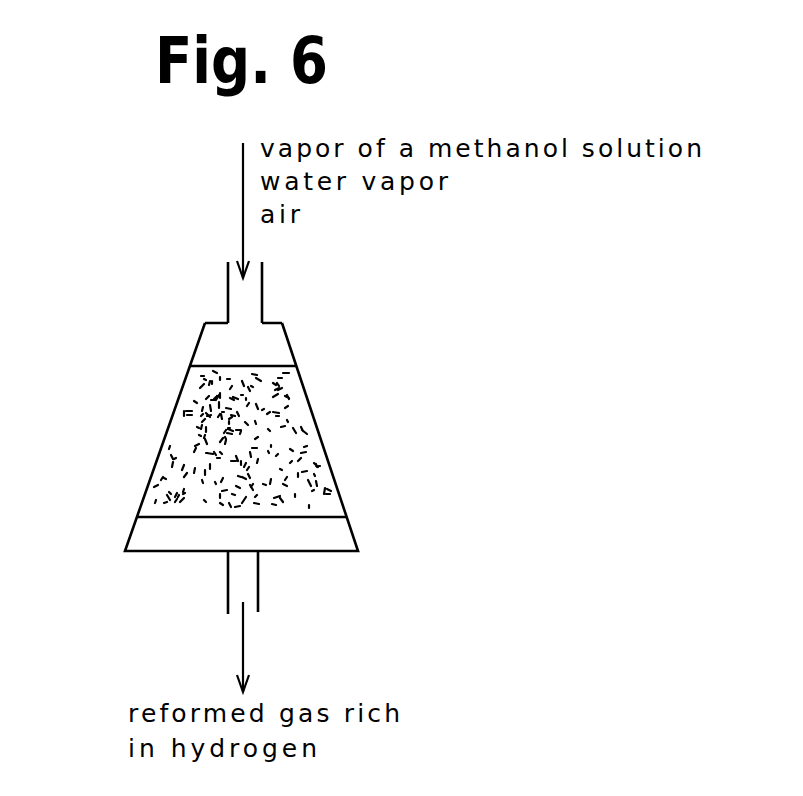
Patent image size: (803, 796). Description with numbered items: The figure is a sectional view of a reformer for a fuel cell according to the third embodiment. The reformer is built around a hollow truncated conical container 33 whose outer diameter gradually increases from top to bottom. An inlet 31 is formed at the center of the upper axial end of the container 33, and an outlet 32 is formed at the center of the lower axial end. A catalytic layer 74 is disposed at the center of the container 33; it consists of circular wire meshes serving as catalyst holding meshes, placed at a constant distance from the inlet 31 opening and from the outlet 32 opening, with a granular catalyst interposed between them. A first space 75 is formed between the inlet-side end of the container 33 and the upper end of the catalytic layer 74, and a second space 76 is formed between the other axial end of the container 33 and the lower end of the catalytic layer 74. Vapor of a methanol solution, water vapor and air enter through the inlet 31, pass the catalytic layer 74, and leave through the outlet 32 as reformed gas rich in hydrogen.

The inlet 31 is at (260, 292).
The outlet 32 is at (260, 585).
The hollow truncated conical container 33 is at (353, 532).
The catalytic layer 74 is at (162, 452).
The first space 75 is at (220, 340).
The second space 76 is at (162, 535).